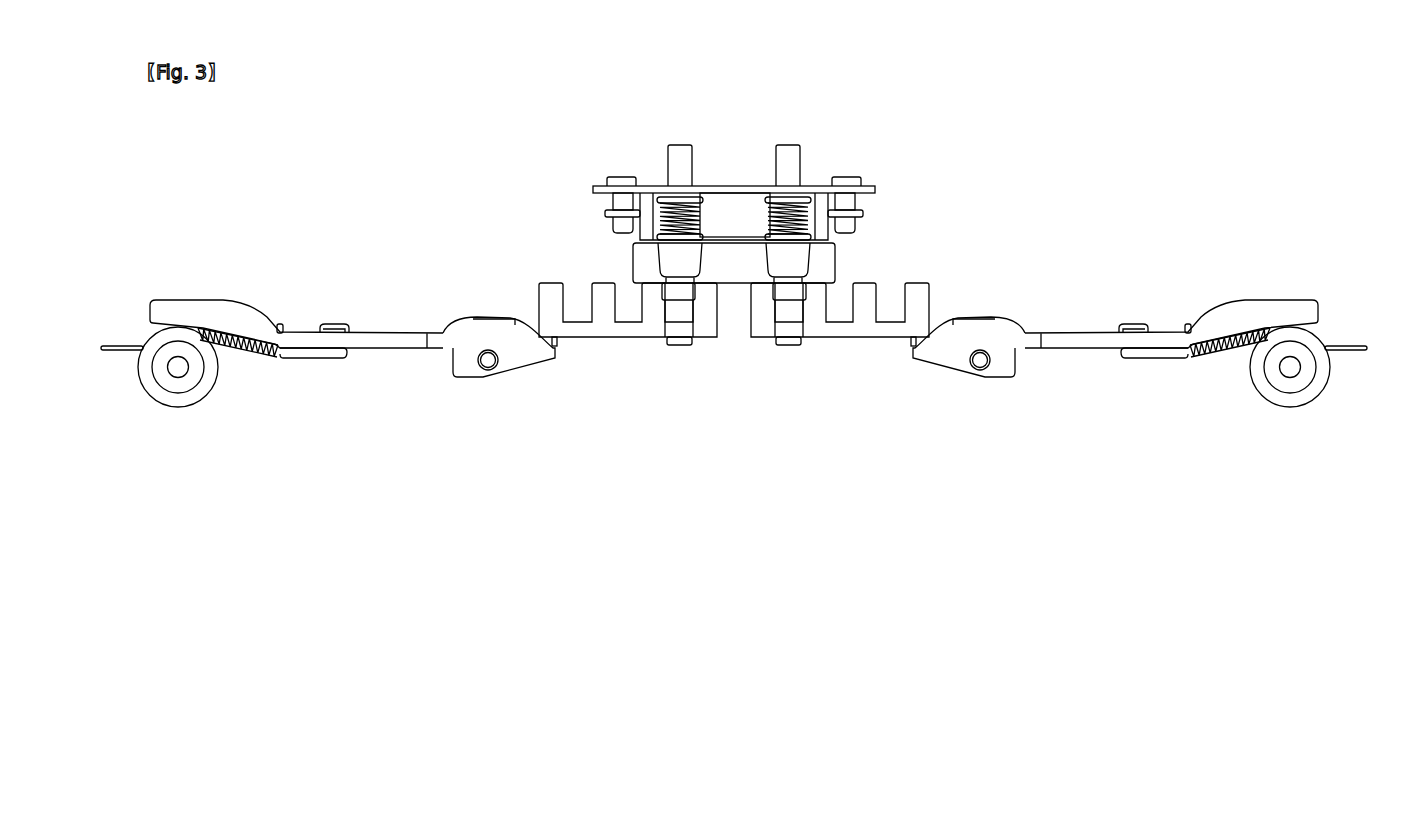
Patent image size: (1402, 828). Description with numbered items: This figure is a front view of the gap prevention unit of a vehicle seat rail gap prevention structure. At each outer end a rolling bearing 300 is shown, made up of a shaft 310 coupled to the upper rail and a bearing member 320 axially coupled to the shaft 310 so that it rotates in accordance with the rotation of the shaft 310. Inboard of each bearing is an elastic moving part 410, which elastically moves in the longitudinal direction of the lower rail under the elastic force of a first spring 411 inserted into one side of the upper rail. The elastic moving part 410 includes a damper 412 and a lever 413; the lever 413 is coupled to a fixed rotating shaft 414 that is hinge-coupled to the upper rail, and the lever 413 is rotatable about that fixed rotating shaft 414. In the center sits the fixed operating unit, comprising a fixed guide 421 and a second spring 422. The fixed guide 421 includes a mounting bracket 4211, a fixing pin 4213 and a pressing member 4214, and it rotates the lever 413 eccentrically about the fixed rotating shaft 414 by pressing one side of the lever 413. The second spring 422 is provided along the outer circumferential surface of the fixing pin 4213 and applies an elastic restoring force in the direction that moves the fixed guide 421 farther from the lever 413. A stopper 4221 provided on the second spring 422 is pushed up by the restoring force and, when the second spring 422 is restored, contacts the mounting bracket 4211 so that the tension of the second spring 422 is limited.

The rolling bearing 300 is at (1262, 232).
The shaft 310 is at (1290, 365).
The bearing member 320 is at (1319, 347).
The elastic moving part 410 is at (943, 458).
The first spring 411 is at (1228, 367).
The damper 412 is at (1207, 333).
The lever 413 is at (953, 358).
The fixed rotating shaft 414 is at (981, 363).
The fixed guide 421 is at (905, 78).
The mounting bracket 4211 is at (705, 186).
The fixing pin 4213 is at (788, 145).
The pressing member 4214 is at (883, 325).
The second spring 422 is at (645, 222).
The stopper 4221 is at (672, 186).